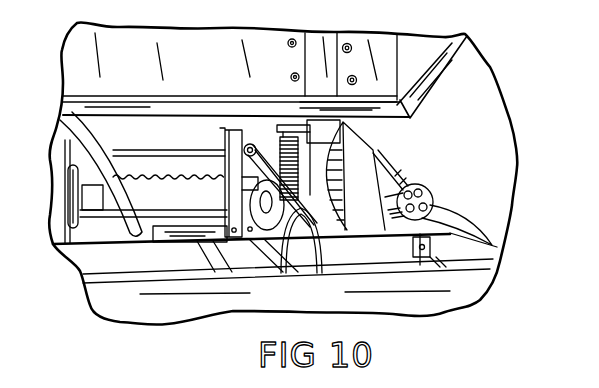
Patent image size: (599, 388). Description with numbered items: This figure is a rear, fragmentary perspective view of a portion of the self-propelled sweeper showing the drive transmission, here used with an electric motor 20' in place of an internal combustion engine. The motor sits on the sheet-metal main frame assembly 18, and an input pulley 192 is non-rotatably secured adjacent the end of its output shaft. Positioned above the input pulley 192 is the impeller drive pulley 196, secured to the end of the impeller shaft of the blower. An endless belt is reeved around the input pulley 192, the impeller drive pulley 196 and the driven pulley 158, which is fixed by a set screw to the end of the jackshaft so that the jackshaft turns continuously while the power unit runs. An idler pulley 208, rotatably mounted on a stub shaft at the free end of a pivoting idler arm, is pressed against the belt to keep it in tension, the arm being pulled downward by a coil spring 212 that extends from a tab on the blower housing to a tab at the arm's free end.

The main frame assembly 18 is at (100, 232).
The electric motor 20' is at (153, 169).
The driven pulley 158 is at (213, 244).
The input pulley 192 is at (238, 153).
The impeller drive pulley 196 is at (251, 145).
The idler pulley 208 is at (258, 210).
The coil spring 212 is at (300, 163).